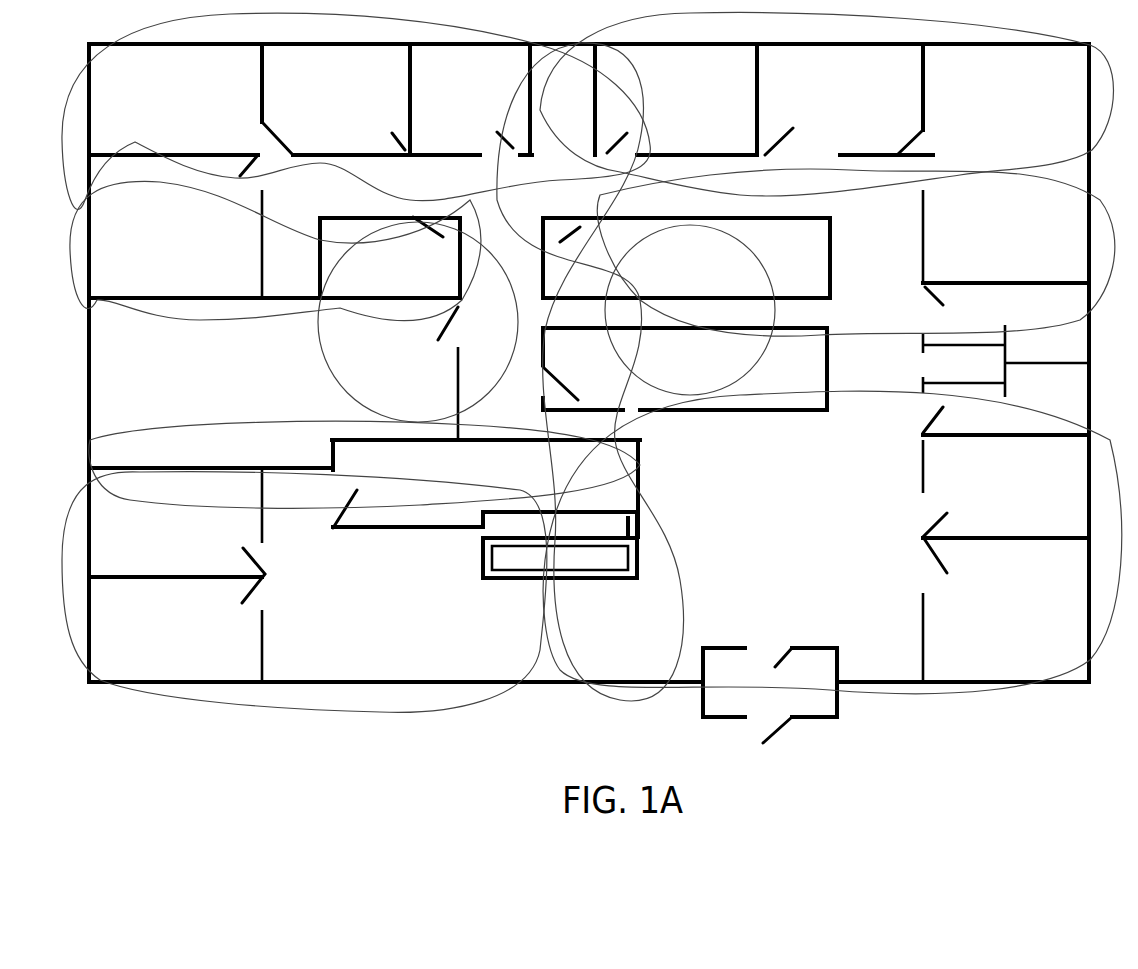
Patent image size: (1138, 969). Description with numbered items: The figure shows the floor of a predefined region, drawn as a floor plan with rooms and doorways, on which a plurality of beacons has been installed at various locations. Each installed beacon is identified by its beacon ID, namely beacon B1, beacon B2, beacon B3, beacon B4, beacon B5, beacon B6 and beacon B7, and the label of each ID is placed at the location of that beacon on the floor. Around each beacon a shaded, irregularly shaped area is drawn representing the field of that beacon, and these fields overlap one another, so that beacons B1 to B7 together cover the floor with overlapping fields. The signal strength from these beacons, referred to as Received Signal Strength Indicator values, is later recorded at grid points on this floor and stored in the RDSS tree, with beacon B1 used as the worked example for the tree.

The beacon B1 is at (590, 372).
The beacon B2 is at (356, 111).
The beacon B3 is at (827, 104).
The beacon B4 is at (294, 301).
The beacon B5 is at (351, 566).
The beacon B6 is at (855, 282).
The beacon B7 is at (832, 542).